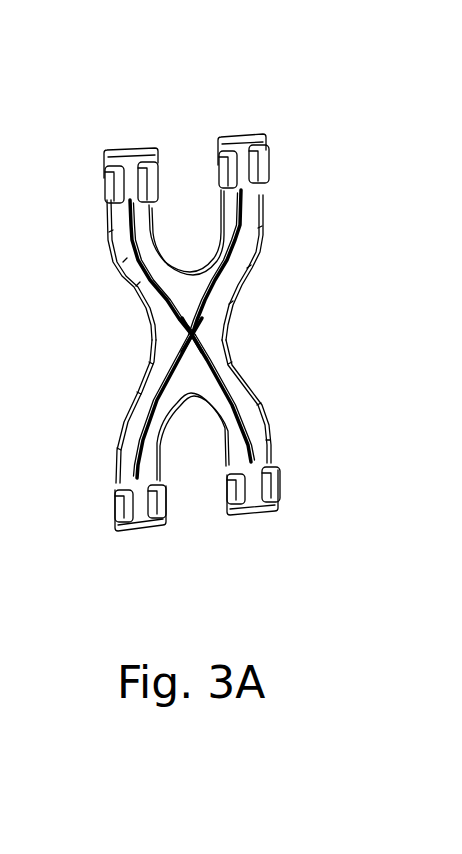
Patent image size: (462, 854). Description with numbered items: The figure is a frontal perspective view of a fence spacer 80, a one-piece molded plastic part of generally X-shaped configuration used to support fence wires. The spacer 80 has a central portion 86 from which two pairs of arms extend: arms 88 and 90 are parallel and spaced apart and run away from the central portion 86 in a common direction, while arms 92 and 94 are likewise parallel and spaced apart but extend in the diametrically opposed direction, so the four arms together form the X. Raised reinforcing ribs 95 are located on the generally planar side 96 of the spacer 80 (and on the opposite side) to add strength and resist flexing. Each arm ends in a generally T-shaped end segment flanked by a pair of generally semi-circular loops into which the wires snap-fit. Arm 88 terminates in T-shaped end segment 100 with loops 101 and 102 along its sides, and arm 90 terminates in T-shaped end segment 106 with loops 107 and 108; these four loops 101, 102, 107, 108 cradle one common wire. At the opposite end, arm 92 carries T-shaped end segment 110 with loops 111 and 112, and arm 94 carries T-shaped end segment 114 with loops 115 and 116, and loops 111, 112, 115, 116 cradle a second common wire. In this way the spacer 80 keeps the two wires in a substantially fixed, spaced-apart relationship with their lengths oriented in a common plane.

The spacer 80 is at (291, 206).
The central portion 86 is at (190, 382).
The arm 88 is at (110, 243).
The arm 90 is at (259, 237).
The arm 92 is at (120, 438).
The arm 94 is at (264, 420).
The raised reinforcing ribs 95 is at (168, 363).
The planar side 96 is at (198, 300).
The T-shaped end segment 100 is at (121, 152).
The loop 101 is at (157, 188).
The loop 102 is at (104, 176).
The T-shaped end segment 106 is at (240, 138).
The loop 107 is at (268, 163).
The loop 108 is at (221, 163).
The T-shaped end segment 110 is at (138, 523).
The loop 111 is at (120, 499).
The loop 112 is at (162, 502).
The T-shaped end segment 114 is at (260, 510).
The loop 115 is at (229, 512).
The loop 116 is at (275, 485).